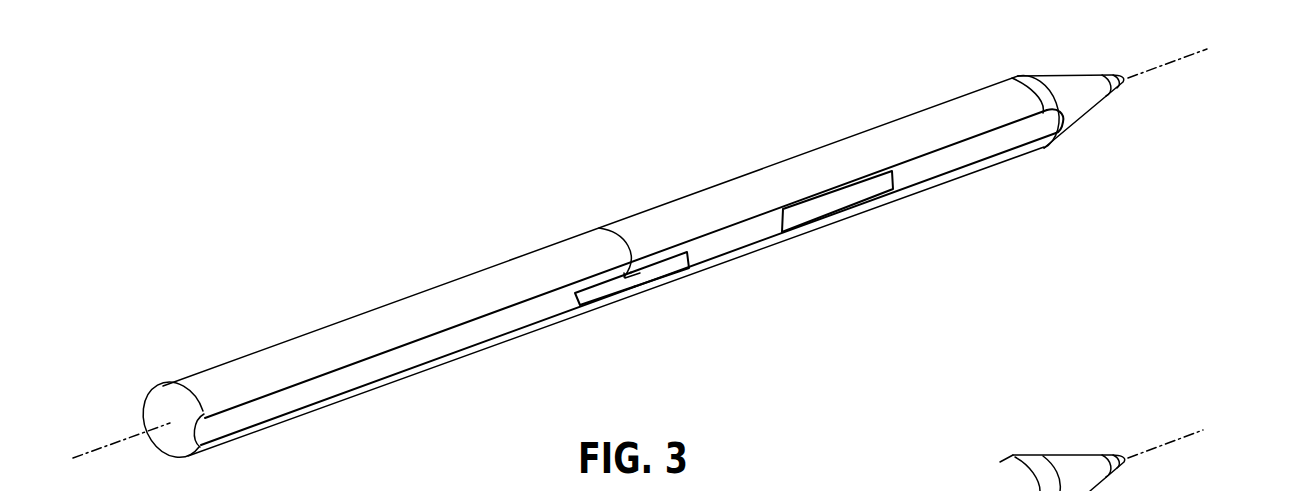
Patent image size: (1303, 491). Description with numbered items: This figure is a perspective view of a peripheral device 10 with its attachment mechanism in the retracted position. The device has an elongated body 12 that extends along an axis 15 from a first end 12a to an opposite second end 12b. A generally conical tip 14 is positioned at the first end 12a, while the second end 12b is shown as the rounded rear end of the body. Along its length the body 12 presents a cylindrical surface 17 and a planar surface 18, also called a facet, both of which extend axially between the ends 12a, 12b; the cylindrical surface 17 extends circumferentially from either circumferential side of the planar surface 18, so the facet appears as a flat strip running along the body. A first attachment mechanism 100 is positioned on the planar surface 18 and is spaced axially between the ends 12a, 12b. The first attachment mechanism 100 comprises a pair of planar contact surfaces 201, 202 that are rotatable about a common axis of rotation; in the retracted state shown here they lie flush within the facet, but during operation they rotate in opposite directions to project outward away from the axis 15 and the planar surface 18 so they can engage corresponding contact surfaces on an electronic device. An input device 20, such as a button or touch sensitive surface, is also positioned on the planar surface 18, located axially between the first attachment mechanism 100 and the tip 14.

The peripheral device 10 is at (448, 156).
The body 12 is at (366, 301).
The first end 12a is at (1141, 90).
The second end 12b is at (155, 402).
The tip 14 is at (1069, 76).
The axis 15 is at (1172, 60).
The cylindrical surface 17 is at (718, 197).
The planar surface 18 is at (338, 390).
The input device 20 is at (838, 203).
The first attachment mechanism 100 is at (568, 309).
The planar contact surface 201 is at (600, 290).
The planar contact surface 202 is at (667, 265).